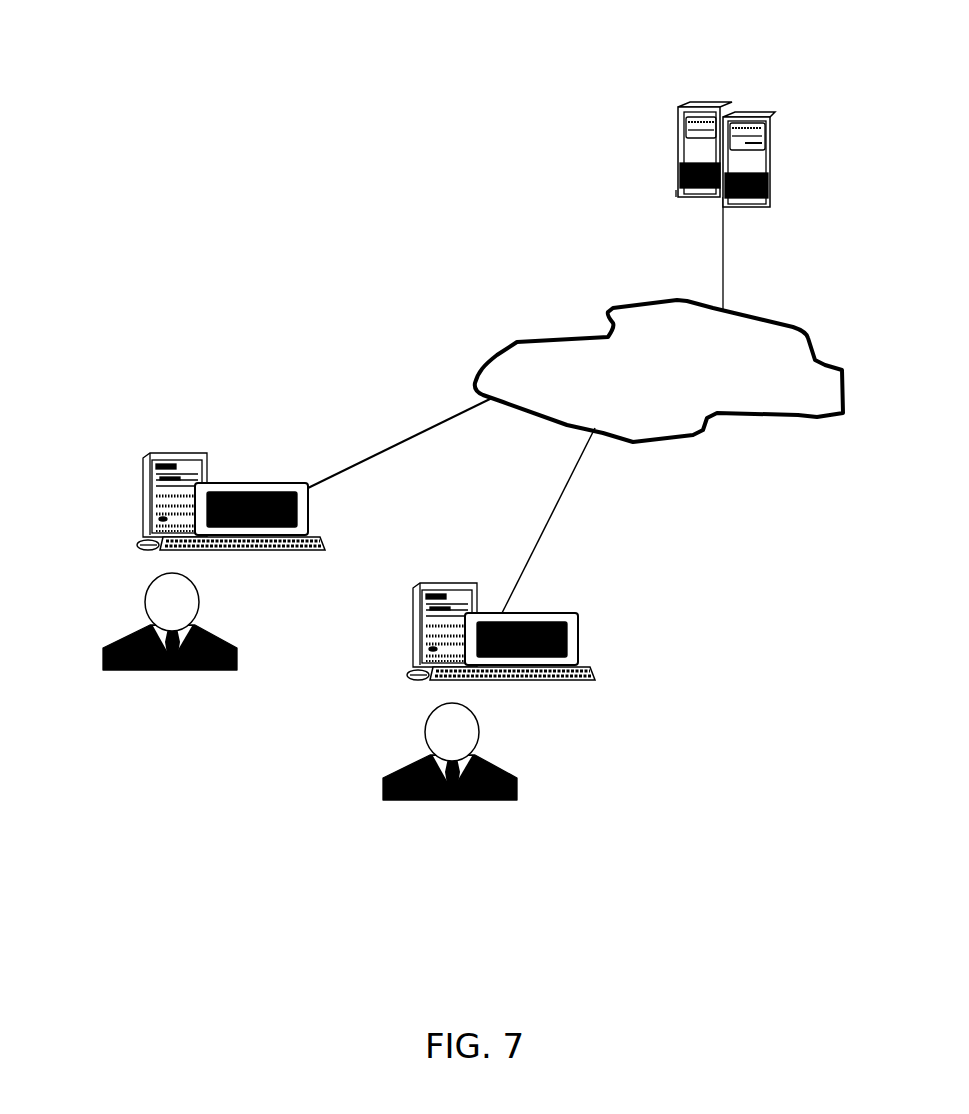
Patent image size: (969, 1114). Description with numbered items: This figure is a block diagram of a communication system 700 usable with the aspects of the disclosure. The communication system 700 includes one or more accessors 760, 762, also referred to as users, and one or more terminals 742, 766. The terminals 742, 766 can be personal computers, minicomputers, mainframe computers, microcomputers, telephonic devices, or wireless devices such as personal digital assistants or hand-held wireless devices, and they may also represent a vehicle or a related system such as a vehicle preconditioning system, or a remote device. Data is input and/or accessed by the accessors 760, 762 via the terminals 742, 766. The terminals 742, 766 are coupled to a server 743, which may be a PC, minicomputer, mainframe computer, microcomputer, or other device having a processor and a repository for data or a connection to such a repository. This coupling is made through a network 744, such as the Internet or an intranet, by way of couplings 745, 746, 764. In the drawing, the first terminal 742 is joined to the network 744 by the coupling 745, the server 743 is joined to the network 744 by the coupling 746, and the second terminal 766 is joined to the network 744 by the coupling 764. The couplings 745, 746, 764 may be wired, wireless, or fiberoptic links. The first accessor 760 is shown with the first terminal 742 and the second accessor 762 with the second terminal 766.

The communication system 700 is at (188, 56).
The terminal 742 is at (173, 453).
The server 743 is at (707, 100).
The network 744 is at (530, 342).
The coupling 745 is at (353, 465).
The coupling 746 is at (727, 267).
The accessor 760 is at (135, 628).
The accessor 762 is at (497, 767).
The coupling 764 is at (570, 480).
The terminal 766 is at (577, 613).